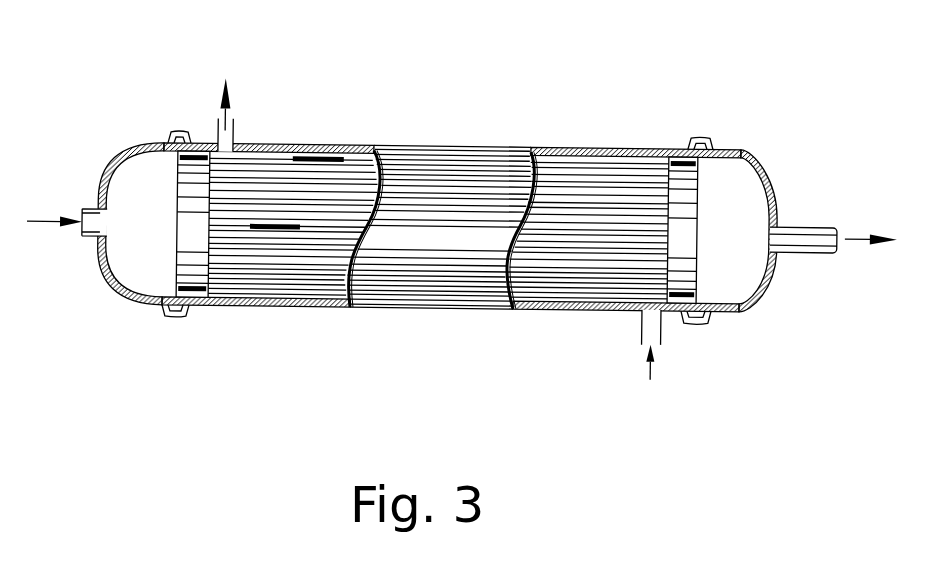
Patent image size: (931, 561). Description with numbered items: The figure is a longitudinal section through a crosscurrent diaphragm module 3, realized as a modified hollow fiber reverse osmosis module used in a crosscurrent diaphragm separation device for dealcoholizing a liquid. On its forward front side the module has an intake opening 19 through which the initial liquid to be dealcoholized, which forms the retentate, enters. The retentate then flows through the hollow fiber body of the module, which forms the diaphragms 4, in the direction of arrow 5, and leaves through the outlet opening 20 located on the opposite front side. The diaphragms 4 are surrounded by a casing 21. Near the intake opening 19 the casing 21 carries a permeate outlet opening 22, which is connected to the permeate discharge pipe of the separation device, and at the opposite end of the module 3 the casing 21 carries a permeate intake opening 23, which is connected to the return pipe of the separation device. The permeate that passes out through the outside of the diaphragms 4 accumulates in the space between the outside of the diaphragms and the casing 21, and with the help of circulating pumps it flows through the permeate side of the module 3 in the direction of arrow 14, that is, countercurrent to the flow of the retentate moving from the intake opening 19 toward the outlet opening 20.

The crosscurrent diaphragm module 3 is at (444, 315).
The diaphragms 4 is at (321, 227).
The arrow 5 is at (275, 228).
The arrow 14 is at (325, 145).
The intake opening 19 is at (92, 209).
The outlet opening 20 is at (783, 238).
The casing 21 is at (547, 310).
The permeate outlet opening 22 is at (223, 140).
The permeate intake opening 23 is at (647, 320).